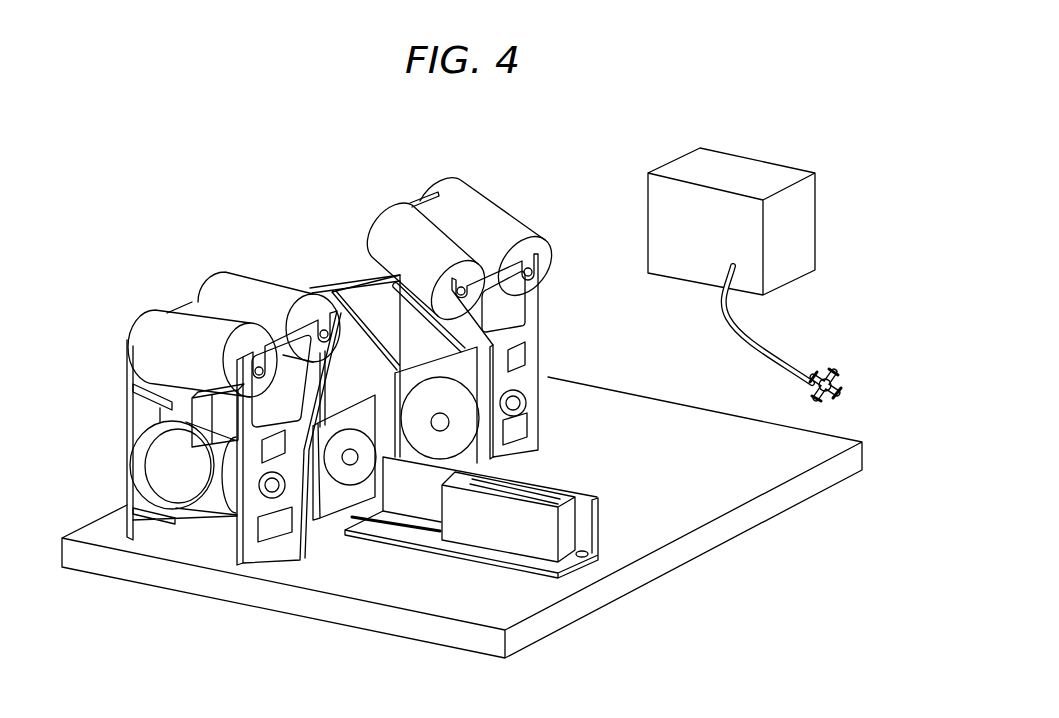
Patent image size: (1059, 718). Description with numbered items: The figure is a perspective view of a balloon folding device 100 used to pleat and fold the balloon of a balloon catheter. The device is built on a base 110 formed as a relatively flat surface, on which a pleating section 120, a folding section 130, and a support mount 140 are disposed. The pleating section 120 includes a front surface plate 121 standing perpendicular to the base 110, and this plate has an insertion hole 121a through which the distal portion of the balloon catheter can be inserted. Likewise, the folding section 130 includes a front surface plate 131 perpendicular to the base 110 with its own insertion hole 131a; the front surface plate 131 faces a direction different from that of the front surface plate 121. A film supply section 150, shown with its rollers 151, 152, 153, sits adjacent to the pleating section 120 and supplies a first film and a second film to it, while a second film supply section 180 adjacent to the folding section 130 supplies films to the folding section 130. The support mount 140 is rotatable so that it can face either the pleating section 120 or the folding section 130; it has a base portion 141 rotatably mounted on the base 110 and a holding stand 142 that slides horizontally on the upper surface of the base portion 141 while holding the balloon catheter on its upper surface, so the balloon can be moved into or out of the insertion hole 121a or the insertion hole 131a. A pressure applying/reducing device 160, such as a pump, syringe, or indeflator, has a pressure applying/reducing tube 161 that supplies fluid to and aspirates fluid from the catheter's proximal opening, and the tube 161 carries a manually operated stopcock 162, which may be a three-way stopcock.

The balloon folding device 100 is at (190, 137).
The base 110 is at (605, 600).
The pleating section 120 is at (362, 410).
The front surface plate 121 is at (337, 505).
The insertion hole 121a is at (345, 463).
The folding section 130 is at (463, 365).
The front surface plate 131 is at (458, 400).
The insertion hole 131a is at (442, 419).
The support mount 140 is at (427, 550).
The base portion 141 is at (477, 558).
The holding stand 142 is at (535, 547).
The film supply section 150 is at (160, 308).
The first roller 151 is at (150, 335).
The second roller 152 is at (227, 290).
The third roller 153 is at (155, 460).
The pressure applying/reducing device 160 is at (660, 220).
The pressure applying/reducing tube 161 is at (717, 303).
The stopcock 162 is at (811, 378).
The film supply section 180 is at (480, 186).